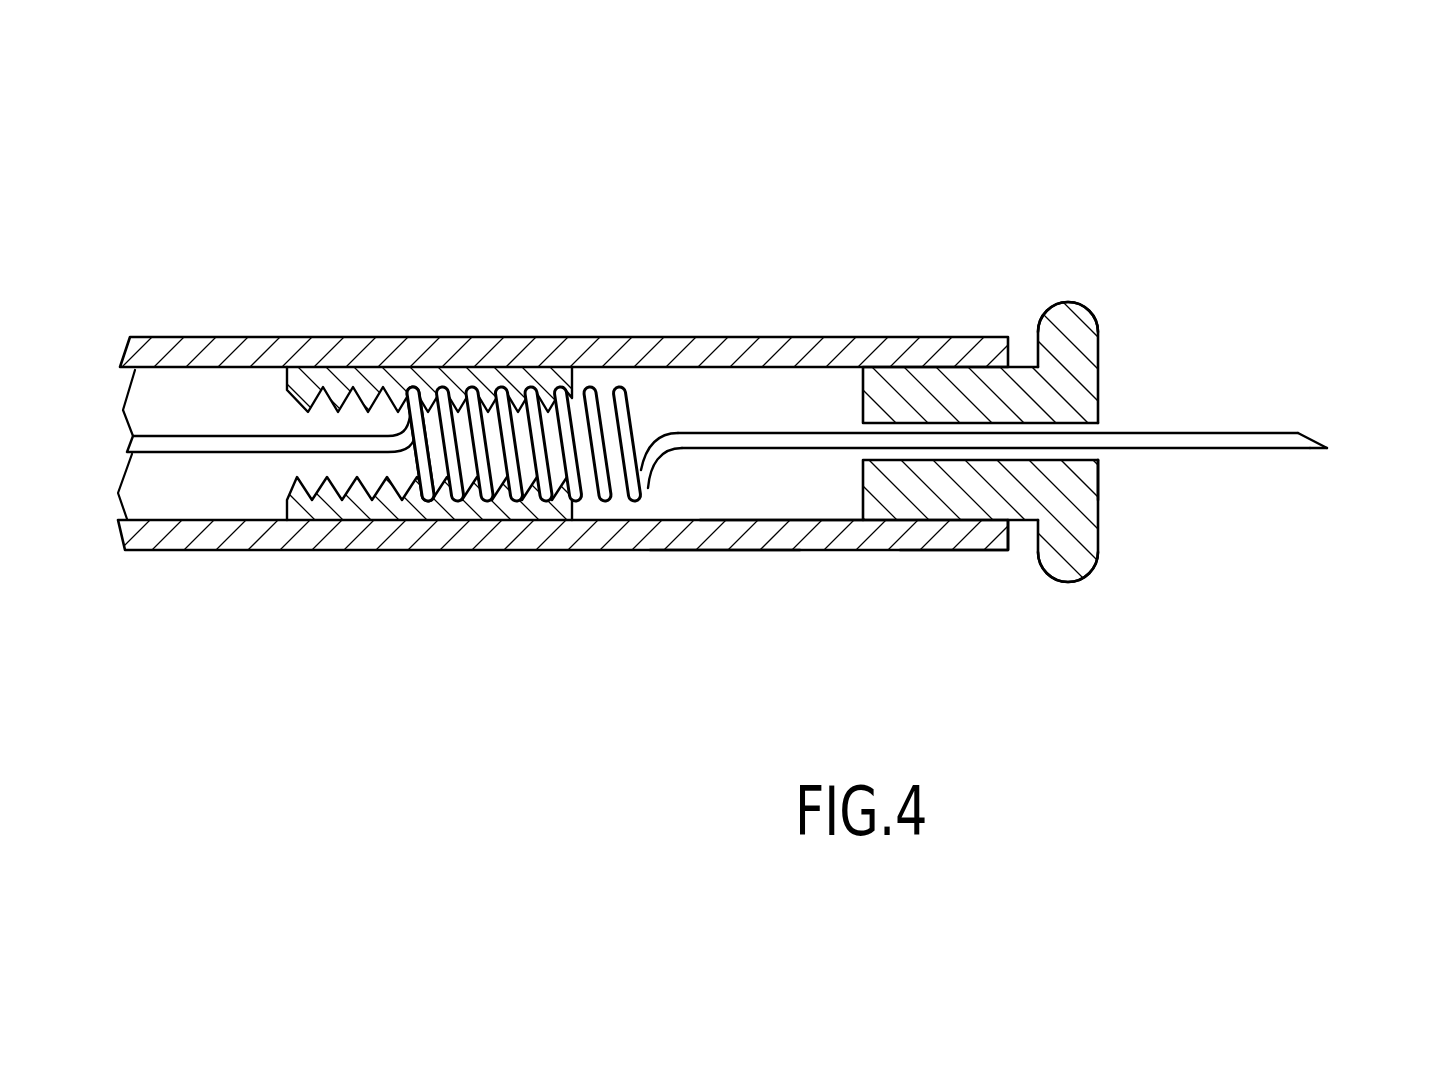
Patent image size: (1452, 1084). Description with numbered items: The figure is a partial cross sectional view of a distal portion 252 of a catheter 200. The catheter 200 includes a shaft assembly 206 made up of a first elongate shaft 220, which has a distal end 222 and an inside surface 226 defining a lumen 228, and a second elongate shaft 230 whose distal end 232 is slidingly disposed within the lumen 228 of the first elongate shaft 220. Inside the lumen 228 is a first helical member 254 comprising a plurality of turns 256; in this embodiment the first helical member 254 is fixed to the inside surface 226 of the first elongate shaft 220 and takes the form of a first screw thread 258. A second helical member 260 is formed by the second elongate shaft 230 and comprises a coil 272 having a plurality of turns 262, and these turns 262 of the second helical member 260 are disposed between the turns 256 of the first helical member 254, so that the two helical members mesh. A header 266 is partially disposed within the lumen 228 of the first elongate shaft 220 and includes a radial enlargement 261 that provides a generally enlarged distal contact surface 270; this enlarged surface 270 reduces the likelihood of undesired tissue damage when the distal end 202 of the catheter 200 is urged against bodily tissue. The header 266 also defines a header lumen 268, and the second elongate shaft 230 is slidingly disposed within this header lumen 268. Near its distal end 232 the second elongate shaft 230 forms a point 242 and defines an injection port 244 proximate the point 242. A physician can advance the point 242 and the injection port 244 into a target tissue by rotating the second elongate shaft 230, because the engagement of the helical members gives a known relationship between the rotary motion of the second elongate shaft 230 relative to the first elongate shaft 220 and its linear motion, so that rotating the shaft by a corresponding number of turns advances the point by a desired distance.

The catheter 200 is at (552, 522).
The distal end 202 is at (963, 508).
The shaft assembly 206 is at (249, 324).
The first elongate shaft 220 is at (945, 550).
The distal end 222 is at (1005, 602).
The inside surface 226 is at (710, 500).
The lumen 228 is at (827, 500).
The second elongate shaft 230 is at (1057, 525).
The distal end 232 is at (1258, 616).
The point 242 is at (1340, 461).
The injection port 244 is at (1328, 418).
The distal portion 252 is at (718, 669).
The first helical member 254 is at (441, 399).
The turns 256 is at (312, 398).
The first screw thread 258 is at (270, 485).
The second helical member 260 is at (590, 513).
The radial enlargement 261 is at (1054, 285).
The turns 262 is at (637, 500).
The header 266 is at (1115, 375).
The header lumen 268 is at (1118, 462).
The distal contact surface 270 is at (1118, 515).
The coil 272 is at (615, 510).